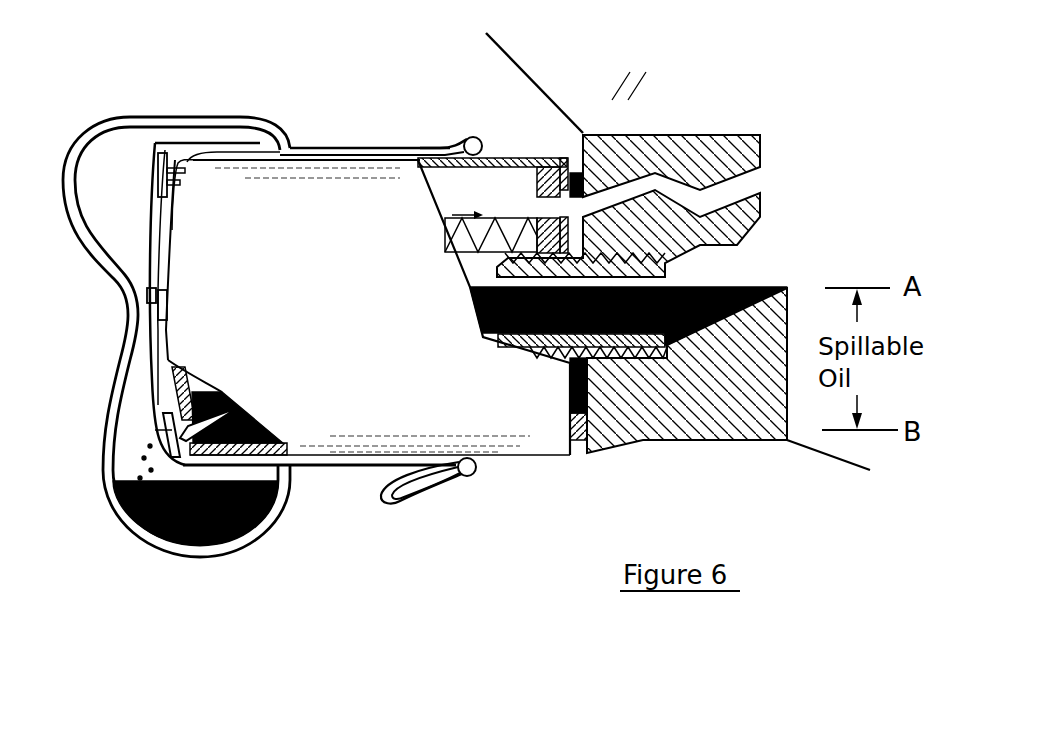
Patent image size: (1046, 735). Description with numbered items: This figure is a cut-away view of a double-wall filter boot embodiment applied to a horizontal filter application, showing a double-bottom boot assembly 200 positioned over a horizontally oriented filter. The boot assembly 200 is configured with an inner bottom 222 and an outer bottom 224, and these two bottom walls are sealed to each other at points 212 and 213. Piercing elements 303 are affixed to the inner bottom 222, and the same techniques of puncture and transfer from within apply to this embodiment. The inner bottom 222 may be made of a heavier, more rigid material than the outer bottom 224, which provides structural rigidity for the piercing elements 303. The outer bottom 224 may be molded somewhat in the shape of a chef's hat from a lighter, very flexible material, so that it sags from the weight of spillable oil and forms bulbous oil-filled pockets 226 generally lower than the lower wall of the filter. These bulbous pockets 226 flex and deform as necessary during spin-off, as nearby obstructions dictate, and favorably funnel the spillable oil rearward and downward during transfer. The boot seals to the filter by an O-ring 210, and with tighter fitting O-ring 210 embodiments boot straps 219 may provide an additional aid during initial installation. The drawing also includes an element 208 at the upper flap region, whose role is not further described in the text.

The boot assembly 200 is at (188, 594).
The upper flap 208 is at (455, 140).
The O-ring 210 is at (473, 136).
The sealing point 212 is at (290, 467).
The sealing point 213 is at (292, 142).
The boot strap 219 is at (443, 494).
The inner bottom 222 is at (160, 430).
The outer bottom 224 is at (168, 540).
The bulbous oil filled pockets 226 is at (222, 537).
The piercing elements 303 is at (160, 312).